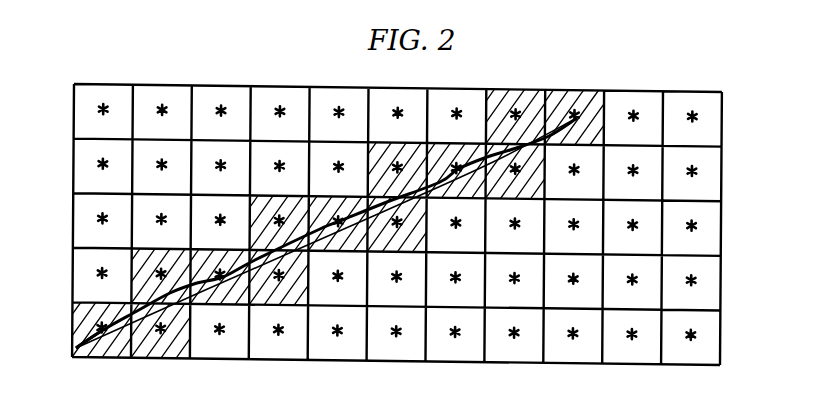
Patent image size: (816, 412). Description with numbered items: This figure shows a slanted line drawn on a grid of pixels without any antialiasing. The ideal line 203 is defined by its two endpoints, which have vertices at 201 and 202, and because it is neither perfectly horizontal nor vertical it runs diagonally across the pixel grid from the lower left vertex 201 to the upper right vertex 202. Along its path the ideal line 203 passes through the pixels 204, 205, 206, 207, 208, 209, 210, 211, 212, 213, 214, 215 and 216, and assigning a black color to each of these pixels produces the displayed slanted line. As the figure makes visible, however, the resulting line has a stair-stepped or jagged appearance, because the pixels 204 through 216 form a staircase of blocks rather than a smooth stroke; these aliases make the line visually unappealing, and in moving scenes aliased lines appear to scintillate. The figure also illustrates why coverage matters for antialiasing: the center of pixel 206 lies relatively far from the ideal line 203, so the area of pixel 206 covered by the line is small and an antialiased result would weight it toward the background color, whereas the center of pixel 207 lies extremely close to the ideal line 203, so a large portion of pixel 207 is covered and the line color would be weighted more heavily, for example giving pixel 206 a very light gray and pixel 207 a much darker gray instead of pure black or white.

The vertex 201 is at (76, 350).
The vertex 202 is at (576, 113).
The ideal line 203 is at (201, 291).
The pixel 204 is at (114, 359).
The pixel 205 is at (179, 359).
The pixel 206 is at (180, 247).
The pixel 207 is at (240, 247).
The pixel 208 is at (298, 306).
The pixel 209 is at (298, 192).
The pixel 210 is at (357, 192).
The pixel 211 is at (409, 251).
The pixel 212 is at (416, 141).
The pixel 213 is at (473, 141).
The pixel 214 is at (532, 198).
The pixel 215 is at (541, 90).
The pixel 216 is at (592, 148).